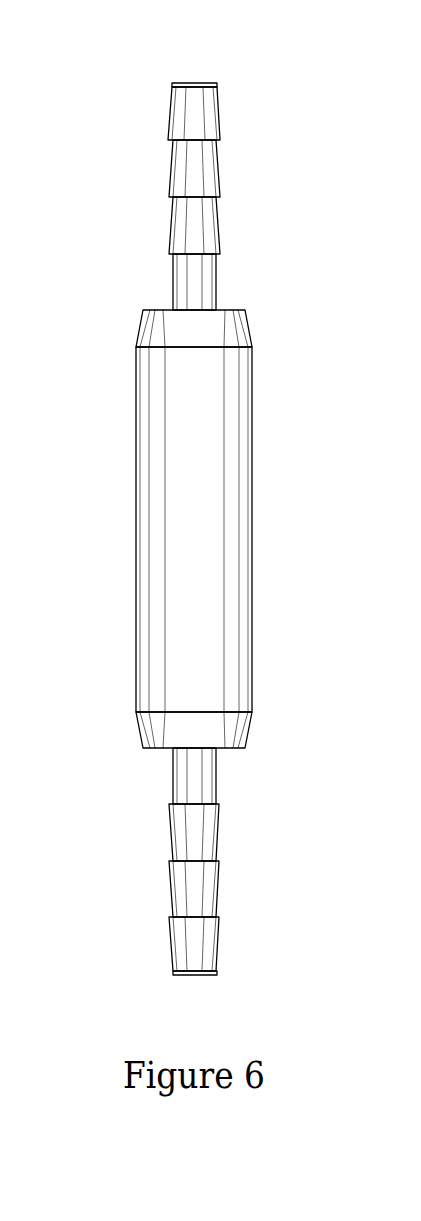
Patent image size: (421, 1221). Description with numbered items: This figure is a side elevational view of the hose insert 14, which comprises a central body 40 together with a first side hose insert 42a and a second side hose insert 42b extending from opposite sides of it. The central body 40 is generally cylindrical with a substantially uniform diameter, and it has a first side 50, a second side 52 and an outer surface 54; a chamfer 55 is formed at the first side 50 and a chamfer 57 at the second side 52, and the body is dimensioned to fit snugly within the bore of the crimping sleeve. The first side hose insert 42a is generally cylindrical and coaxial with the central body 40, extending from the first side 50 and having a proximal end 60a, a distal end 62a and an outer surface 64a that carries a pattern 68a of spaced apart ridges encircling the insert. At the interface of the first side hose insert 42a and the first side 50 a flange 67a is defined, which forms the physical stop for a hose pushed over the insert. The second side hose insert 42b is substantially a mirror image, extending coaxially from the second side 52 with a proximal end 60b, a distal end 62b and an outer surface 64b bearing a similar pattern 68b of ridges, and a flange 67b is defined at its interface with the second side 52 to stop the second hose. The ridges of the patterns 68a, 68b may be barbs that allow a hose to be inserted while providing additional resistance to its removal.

The hose insert 14 is at (202, 529).
The central body 40 is at (194, 529).
The first side hose insert 42a is at (161, 145).
The second side hose insert 42b is at (160, 915).
The first side 50 is at (143, 328).
The second side 52 is at (140, 730).
The outer surface 54 is at (235, 598).
The chamfer 55 is at (186, 311).
The chamfer 57 is at (194, 747).
The proximal end 60a is at (214, 272).
The proximal end 60b is at (231, 750).
The distal end 62a is at (192, 83).
The distal end 62b is at (194, 975).
The outer surface 64a is at (168, 115).
The outer surface 64b is at (170, 862).
The flange 67a is at (158, 310).
The flange 67b is at (157, 750).
The pattern 68a is at (219, 155).
The pattern 68b is at (216, 918).